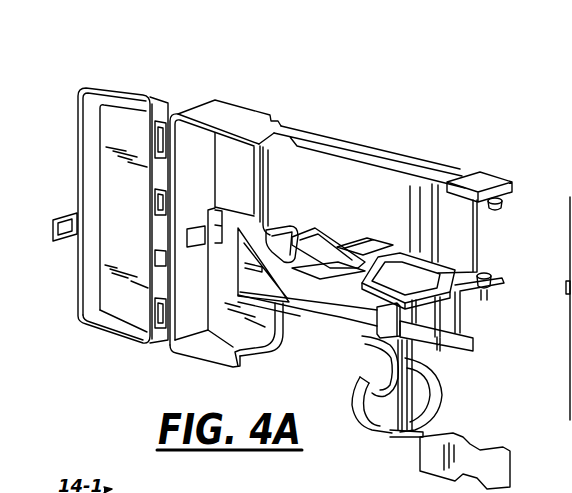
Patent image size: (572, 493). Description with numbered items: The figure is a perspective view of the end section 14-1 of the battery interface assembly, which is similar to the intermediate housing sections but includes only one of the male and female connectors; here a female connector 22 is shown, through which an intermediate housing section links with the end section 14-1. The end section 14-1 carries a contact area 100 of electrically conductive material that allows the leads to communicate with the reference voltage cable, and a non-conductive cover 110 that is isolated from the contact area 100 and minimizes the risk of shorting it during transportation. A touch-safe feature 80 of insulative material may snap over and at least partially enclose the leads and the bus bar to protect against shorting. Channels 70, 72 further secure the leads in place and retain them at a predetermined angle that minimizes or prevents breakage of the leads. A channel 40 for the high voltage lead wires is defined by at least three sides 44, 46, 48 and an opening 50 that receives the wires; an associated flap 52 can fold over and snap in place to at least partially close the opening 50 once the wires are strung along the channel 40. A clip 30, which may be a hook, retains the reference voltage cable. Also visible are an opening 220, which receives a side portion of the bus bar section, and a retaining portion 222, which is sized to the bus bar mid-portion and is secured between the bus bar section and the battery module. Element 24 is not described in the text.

The end section 14-1 is at (266, 95).
The non-conductive cover 110 is at (120, 124).
The contact area 100 is at (228, 215).
The touch-safe feature 80 is at (259, 144).
The channel 70 is at (326, 242).
The channel 72 is at (380, 248).
The opening 220 is at (425, 198).
The retaining portion 222 is at (436, 185).
The female connector 22 is at (487, 178).
The screw 24 is at (496, 206).
The side 44 is at (462, 302).
The side 46 is at (458, 318).
The side 48 is at (472, 343).
The opening 50 is at (318, 312).
The flap 52 is at (362, 337).
The channel 40 is at (434, 350).
The clip 30 is at (380, 431).